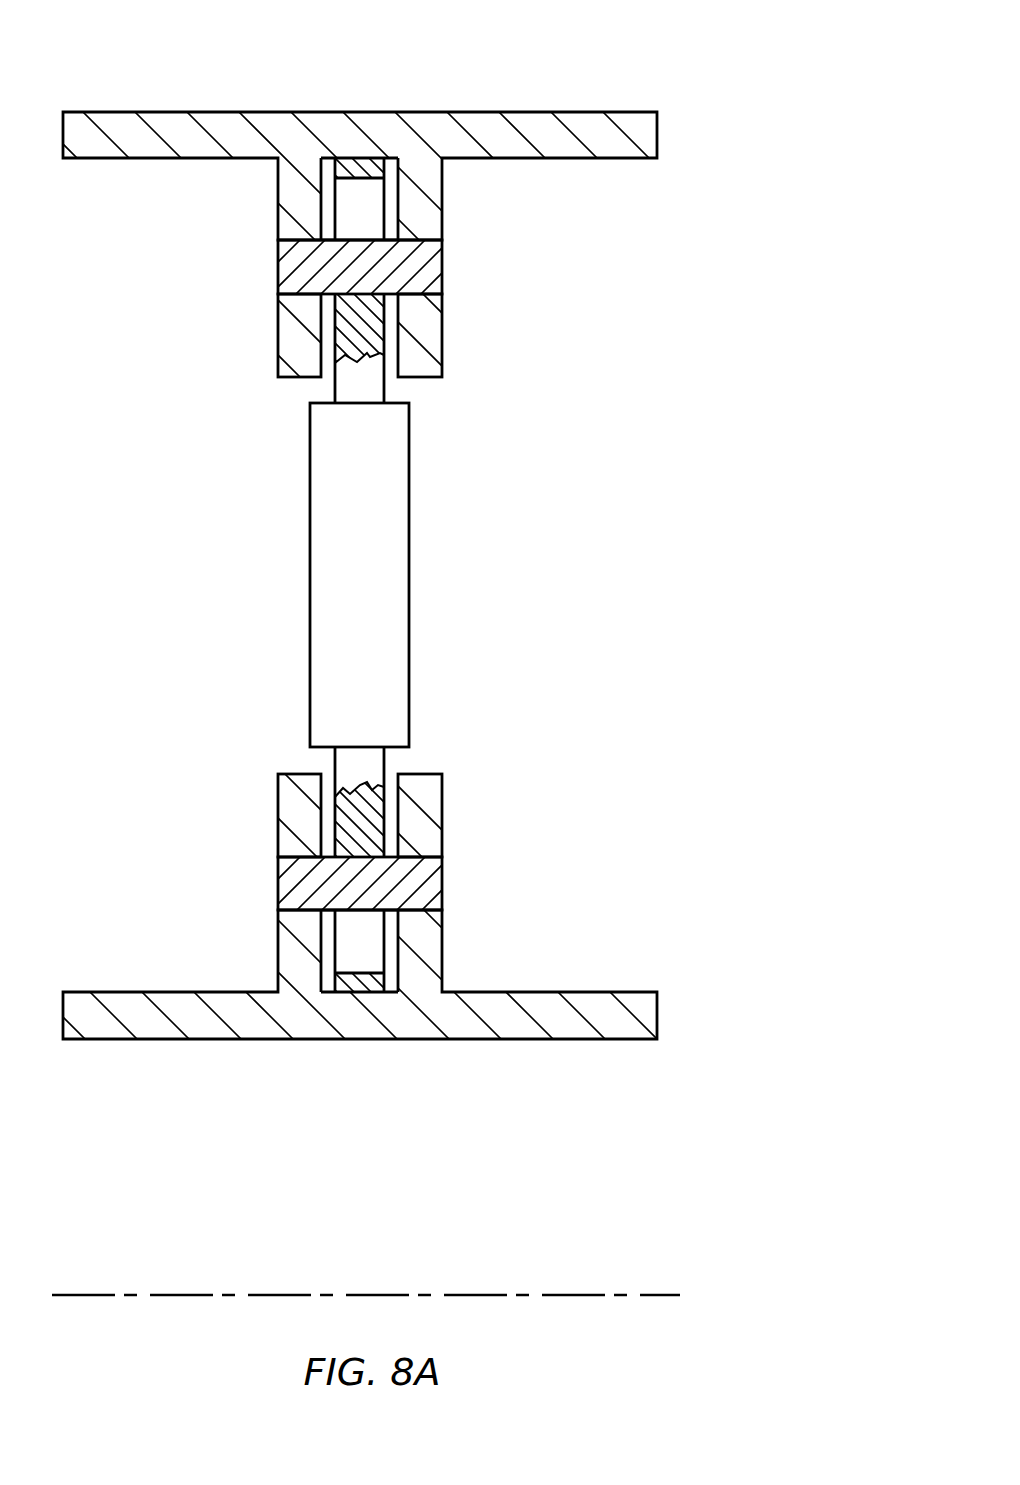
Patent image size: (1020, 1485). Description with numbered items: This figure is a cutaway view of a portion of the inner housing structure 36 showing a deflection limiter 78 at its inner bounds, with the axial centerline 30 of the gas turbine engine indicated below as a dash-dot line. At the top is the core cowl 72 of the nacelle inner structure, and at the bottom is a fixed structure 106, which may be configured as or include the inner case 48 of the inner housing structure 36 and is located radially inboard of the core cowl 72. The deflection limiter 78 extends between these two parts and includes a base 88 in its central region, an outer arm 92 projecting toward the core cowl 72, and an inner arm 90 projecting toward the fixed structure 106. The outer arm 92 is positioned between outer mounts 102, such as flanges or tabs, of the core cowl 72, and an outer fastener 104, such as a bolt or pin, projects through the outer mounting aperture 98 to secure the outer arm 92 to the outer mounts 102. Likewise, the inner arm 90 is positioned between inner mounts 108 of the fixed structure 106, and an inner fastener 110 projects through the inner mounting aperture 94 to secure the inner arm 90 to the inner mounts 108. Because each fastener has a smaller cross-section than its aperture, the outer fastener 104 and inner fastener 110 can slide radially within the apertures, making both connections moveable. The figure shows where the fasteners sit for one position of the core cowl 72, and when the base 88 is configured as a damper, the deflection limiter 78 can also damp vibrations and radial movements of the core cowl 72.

The axial centerline 30 is at (662, 1295).
The inner housing structure 36 is at (510, 742).
The inner case 48 is at (510, 742).
The core cowl 72 is at (455, 112).
The deflection limiter 78 is at (510, 742).
The base 88 is at (410, 643).
The inner arm 90 is at (385, 763).
The outer arm 92 is at (385, 387).
The inner mounting aperture 94 is at (363, 945).
The outer mounting aperture 98 is at (363, 215).
The outer mounts 102 is at (442, 335).
The outer fastener 104 is at (442, 262).
The fixed structure 106 is at (132, 1040).
The inner mounts 108 is at (442, 820).
The inner fastener 110 is at (442, 882).